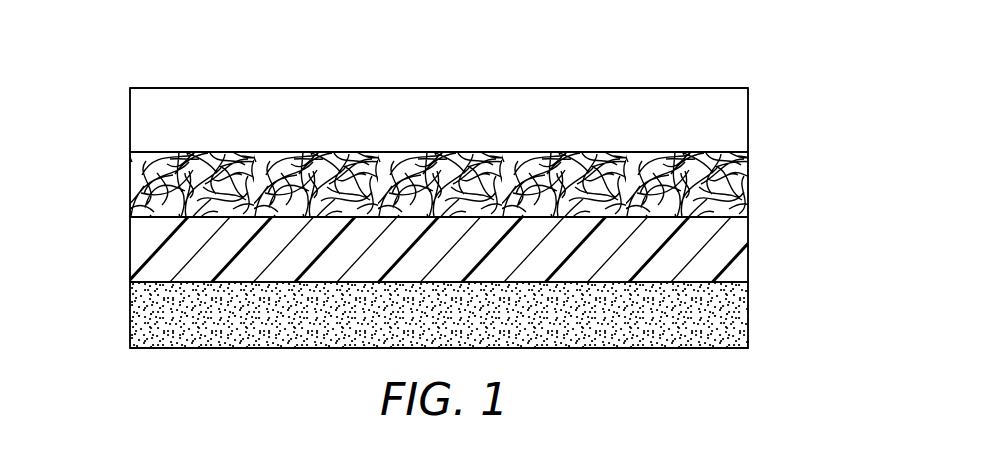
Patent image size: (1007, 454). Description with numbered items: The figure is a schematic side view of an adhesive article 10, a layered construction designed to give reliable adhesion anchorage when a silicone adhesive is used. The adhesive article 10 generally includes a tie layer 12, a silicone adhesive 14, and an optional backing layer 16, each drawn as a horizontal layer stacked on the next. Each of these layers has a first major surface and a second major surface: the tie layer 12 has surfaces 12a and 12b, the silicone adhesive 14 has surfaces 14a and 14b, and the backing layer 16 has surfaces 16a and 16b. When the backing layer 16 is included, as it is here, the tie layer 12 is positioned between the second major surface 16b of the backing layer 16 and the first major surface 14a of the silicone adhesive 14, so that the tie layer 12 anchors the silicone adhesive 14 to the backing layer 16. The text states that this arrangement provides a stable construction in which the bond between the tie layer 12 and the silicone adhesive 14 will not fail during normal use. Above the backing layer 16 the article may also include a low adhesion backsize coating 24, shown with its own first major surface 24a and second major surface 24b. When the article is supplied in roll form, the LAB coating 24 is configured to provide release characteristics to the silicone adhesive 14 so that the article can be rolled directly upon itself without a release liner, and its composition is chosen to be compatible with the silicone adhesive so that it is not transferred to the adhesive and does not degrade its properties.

The adhesive article 10 is at (785, 50).
The tie layer 12 is at (728, 247).
The first major surface of the tie layer 12a is at (140, 215).
The second major surface of the tie layer 12b is at (158, 283).
The silicone adhesive 14 is at (728, 327).
The first major surface of the silicone adhesive 14a is at (748, 283).
The second major surface of the silicone adhesive 14b is at (718, 350).
The backing layer 16 is at (748, 178).
The first major surface of the backing layer 16a is at (718, 152).
The second major surface of the backing layer 16b is at (748, 228).
The low adhesion backsize coating 24 is at (155, 120).
The first major surface of the LAB coating 24a is at (663, 88).
The second major surface of the LAB coating 24b is at (130, 153).